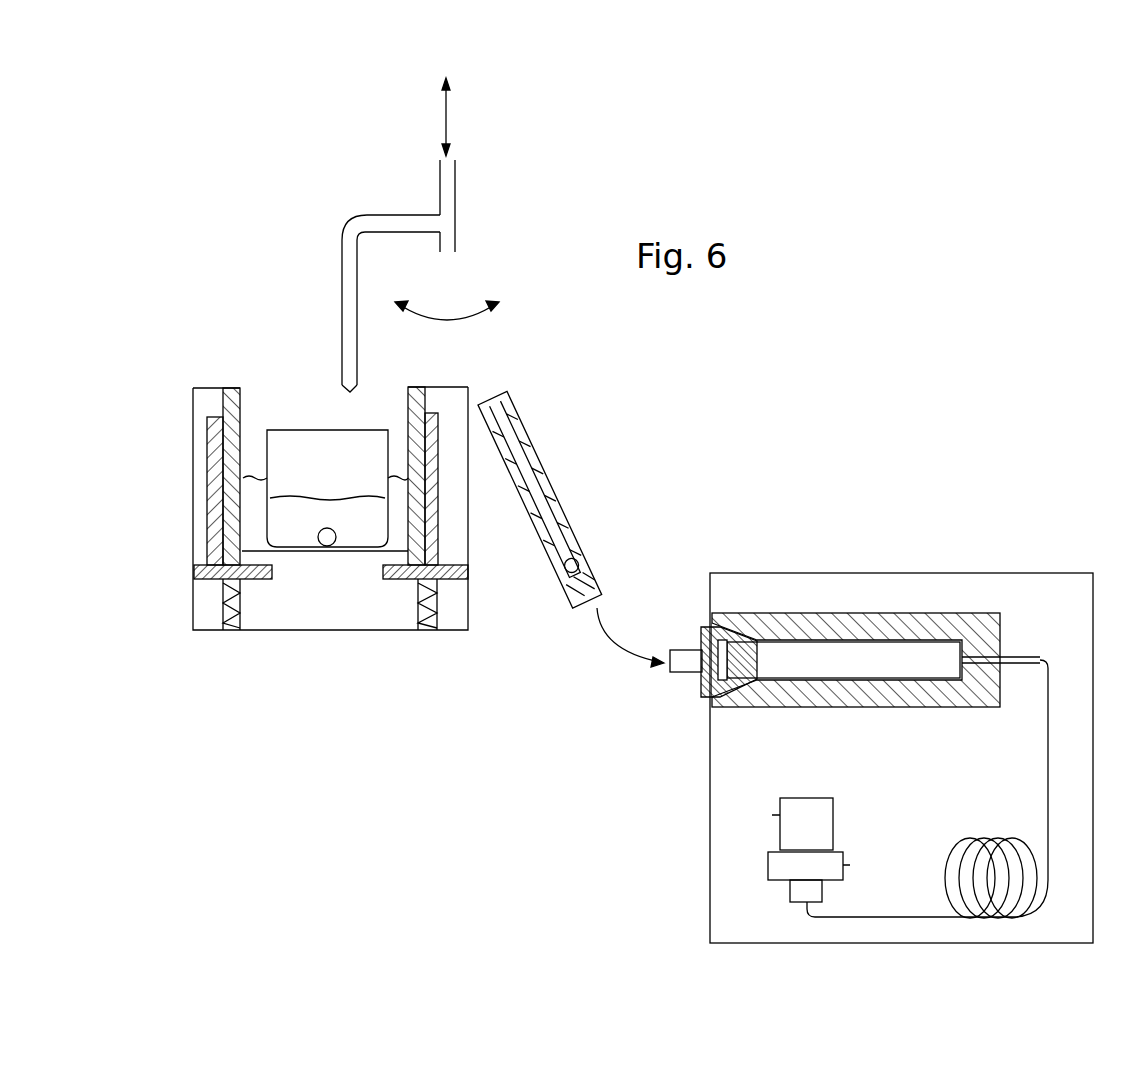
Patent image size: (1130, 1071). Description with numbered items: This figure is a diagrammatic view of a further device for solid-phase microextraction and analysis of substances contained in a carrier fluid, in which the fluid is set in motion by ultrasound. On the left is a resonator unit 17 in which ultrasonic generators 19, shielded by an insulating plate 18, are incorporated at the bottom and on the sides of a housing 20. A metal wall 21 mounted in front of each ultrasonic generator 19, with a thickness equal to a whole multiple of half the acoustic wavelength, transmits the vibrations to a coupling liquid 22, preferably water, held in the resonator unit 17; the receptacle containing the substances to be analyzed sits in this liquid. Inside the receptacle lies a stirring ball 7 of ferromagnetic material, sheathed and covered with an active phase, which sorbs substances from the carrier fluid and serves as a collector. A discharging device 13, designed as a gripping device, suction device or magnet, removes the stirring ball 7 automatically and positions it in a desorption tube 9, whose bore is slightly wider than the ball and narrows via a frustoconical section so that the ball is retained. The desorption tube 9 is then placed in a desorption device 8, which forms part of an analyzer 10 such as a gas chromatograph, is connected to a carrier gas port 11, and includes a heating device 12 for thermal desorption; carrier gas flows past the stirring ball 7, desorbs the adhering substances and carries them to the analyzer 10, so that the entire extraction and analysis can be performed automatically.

The stirring ball 7 is at (577, 562).
The desorption device 8 is at (742, 615).
The desorption tube 9 is at (560, 497).
The analyzer 10 is at (708, 767).
The carrier gas port 11 is at (722, 627).
The heating device 12 is at (797, 638).
The discharging device 13 is at (403, 225).
The resonator unit 17 is at (247, 622).
The insulating plate 18 is at (200, 565).
The ultrasonic generator 19 is at (200, 427).
The housing 20 is at (185, 477).
The metal wall 21 is at (227, 412).
The coupling liquid 22 is at (247, 503).